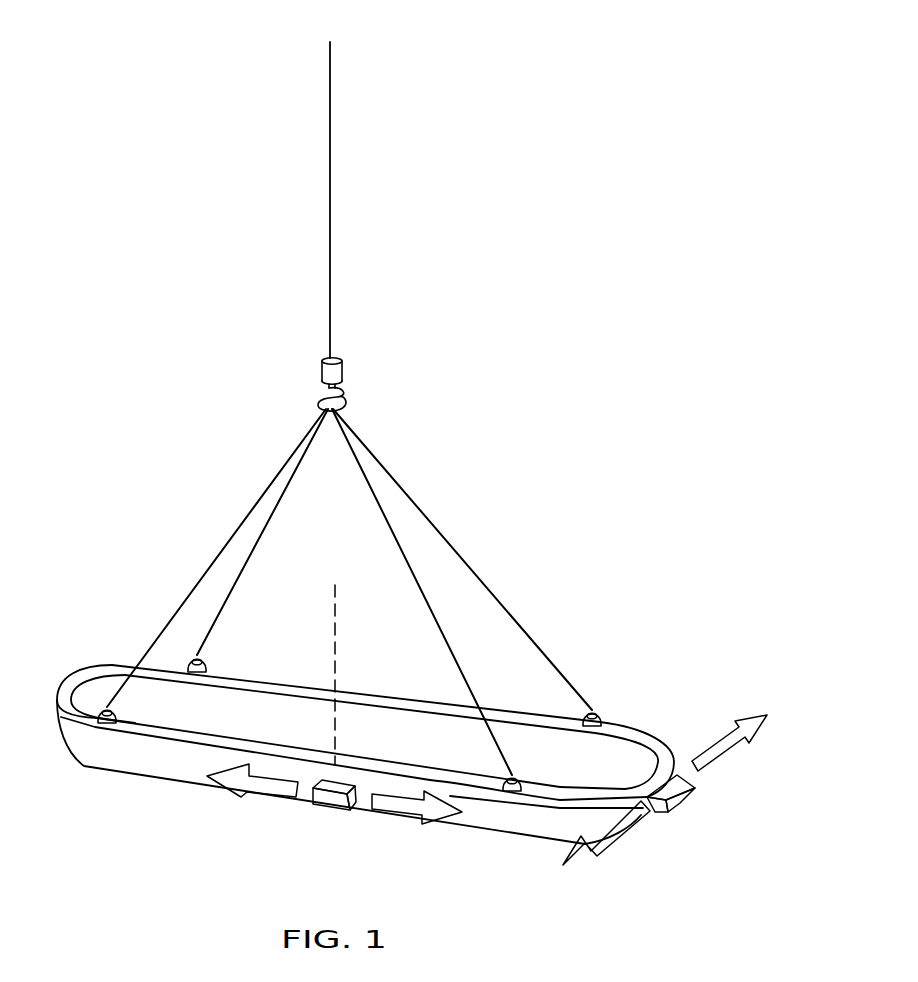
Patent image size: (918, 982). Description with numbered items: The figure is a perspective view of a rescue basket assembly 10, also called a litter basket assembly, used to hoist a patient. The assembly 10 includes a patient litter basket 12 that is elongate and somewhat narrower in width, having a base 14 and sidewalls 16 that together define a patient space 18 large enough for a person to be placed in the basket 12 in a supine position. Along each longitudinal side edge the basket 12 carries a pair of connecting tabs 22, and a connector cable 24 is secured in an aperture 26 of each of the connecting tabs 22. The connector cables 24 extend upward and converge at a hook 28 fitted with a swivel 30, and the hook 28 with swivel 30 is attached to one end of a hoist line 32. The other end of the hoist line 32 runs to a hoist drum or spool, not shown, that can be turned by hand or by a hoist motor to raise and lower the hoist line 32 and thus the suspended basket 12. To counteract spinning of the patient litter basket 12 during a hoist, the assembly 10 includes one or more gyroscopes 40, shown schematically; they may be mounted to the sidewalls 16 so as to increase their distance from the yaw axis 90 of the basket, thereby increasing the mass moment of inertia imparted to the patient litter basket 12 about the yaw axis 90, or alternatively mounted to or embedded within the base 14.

The rescue basket assembly 10 is at (108, 146).
The patient litter basket 12 is at (409, 738).
The base 14 is at (250, 797).
The sidewalls 16 is at (253, 702).
The patient space 18 is at (388, 738).
The connecting tabs 22 is at (604, 711).
The connector cable 24 is at (224, 544).
The aperture 26 is at (514, 792).
The hook 28 is at (349, 398).
The swivel 30 is at (345, 363).
The hoist line 32 is at (328, 143).
The gyroscopes 40 is at (328, 810).
The yaw axis 90 is at (342, 640).